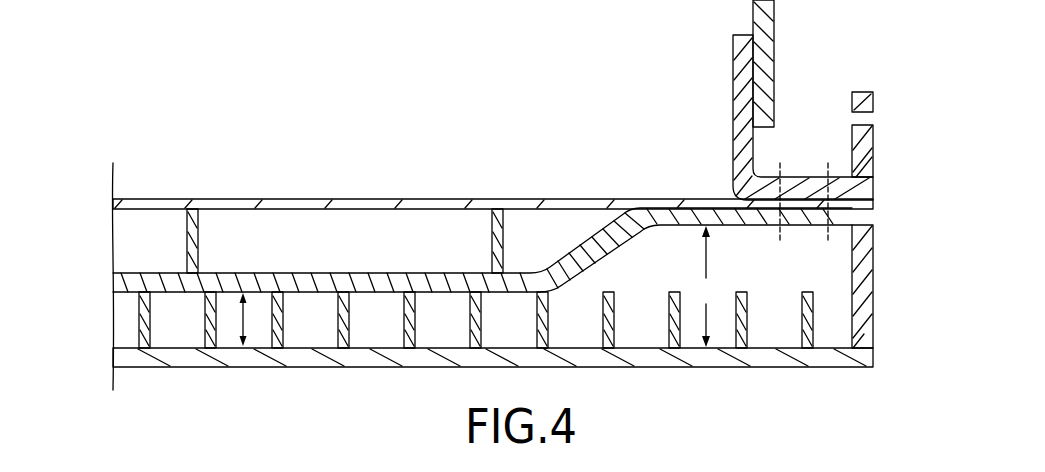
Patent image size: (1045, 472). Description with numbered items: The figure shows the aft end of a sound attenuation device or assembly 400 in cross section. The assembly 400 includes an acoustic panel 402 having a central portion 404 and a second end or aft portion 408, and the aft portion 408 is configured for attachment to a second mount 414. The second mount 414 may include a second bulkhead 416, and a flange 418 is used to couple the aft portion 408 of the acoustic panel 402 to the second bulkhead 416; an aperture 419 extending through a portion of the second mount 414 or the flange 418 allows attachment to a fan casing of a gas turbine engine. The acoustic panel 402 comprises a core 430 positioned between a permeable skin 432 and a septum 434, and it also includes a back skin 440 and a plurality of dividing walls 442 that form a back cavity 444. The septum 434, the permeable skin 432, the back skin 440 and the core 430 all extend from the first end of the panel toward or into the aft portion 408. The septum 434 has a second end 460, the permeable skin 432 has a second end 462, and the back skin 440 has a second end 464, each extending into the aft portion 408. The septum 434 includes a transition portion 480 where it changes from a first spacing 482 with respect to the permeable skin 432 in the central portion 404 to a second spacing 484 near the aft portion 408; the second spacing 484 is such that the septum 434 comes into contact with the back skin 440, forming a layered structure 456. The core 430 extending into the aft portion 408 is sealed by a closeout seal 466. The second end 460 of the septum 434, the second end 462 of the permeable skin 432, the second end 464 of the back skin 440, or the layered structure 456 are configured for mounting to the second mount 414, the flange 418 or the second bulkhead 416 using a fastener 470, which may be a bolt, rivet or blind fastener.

The sound attenuation device or assembly 400 is at (130, 120).
The acoustic panel 402 is at (255, 185).
The central portion 404 is at (419, 168).
The second end or aft portion 408 is at (885, 149).
The second mount 414 is at (679, 103).
The second bulkhead 416 is at (775, 5).
The flange 418 is at (732, 48).
The aperture 419 is at (867, 114).
The core 430 is at (202, 374).
The permeable skin 432 is at (298, 368).
The septum 434 is at (372, 292).
The back skin 440 is at (549, 199).
The dividing walls 442 is at (489, 206).
The back cavity 444 is at (311, 184).
The layered structure 456 is at (707, 200).
The second end of the septum 460 is at (843, 220).
The second end of the permeable skin 462 is at (868, 357).
The second end of the back skin 464 is at (840, 206).
The closeout seal 466 is at (857, 288).
The fastener 470 is at (778, 168).
The transition portion 480 is at (571, 220).
The first spacing 482 is at (242, 346).
The second spacing 484 is at (705, 286).